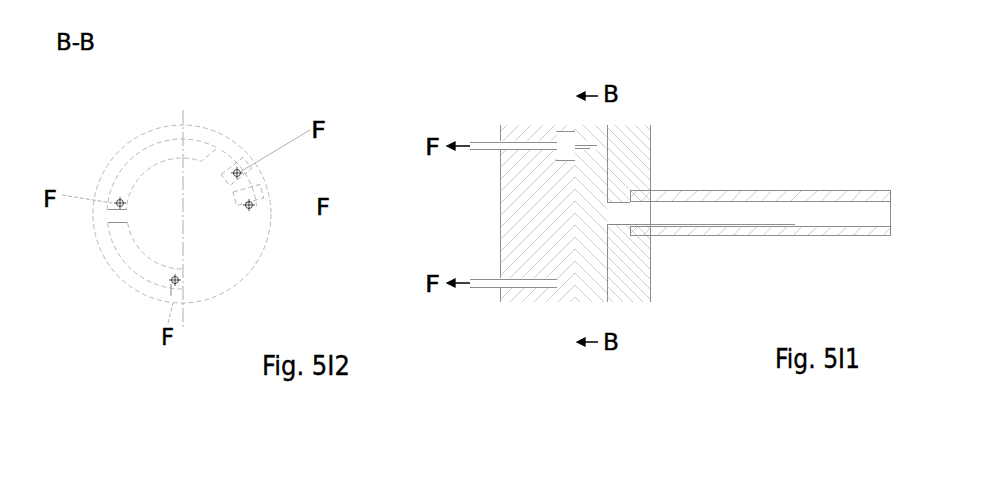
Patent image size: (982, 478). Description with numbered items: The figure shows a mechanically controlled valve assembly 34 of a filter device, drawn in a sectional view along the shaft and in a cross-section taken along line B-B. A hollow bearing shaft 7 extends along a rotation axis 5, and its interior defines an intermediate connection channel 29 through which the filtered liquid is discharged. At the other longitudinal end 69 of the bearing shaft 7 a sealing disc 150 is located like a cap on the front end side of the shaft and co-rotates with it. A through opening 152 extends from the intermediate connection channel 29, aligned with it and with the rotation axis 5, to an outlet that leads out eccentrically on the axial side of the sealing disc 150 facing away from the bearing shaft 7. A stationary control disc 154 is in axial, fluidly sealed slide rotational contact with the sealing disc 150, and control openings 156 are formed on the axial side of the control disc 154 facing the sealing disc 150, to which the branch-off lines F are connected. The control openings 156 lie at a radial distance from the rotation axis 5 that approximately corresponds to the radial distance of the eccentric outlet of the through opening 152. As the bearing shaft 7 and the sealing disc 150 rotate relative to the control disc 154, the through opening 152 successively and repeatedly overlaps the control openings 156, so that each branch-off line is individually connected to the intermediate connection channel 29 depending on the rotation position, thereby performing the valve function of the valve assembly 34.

In FIG. 5I2, the sealing disc 150 is at (148, 240).
In FIG. 5I1, the sealing disc 150 is at (633, 145).
In FIG. 5I1, the through opening 152 is at (573, 143).
In FIG. 5I2, the control disc 154 is at (222, 148).
In FIG. 5I1, the control disc 154 is at (510, 227).
In FIG. 5I2, the control openings 156 is at (150, 152).
In FIG. 5I1, the control openings 156 is at (570, 142).
In FIG. 5I1, the other longitudinal end 69 is at (677, 188).
In FIG. 5I1, the intermediate connection channel 29 is at (715, 217).
In FIG. 5I1, the bearing shaft 7 is at (750, 246).
In FIG. 5I1, the rotation axis 5 is at (818, 212).
In FIG. 5I1, the valve assembly 34 is at (520, 295).